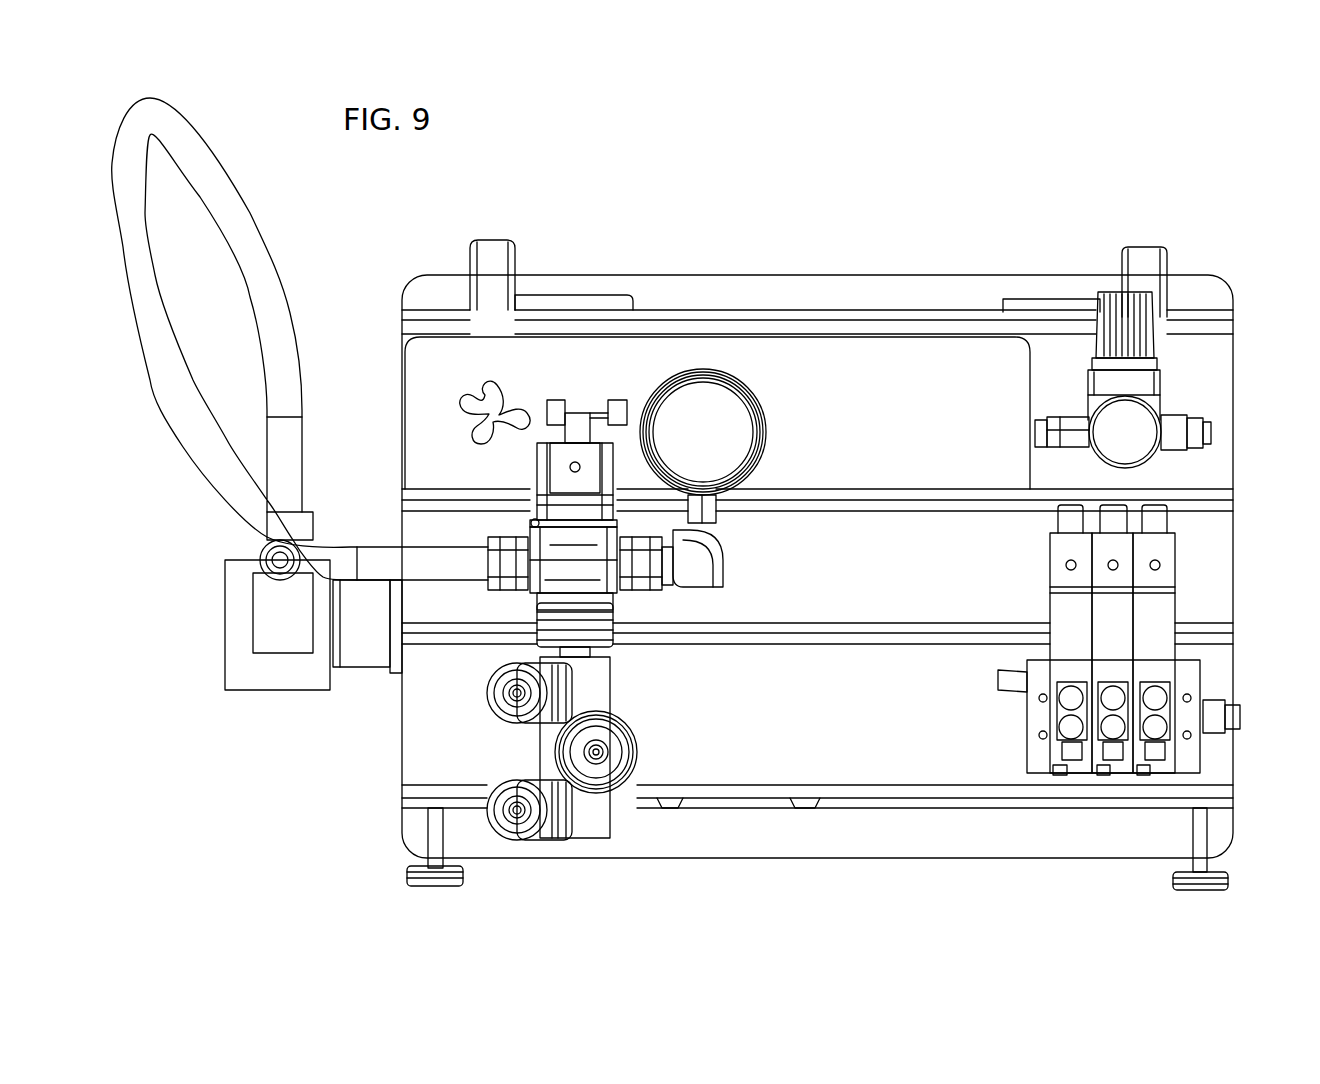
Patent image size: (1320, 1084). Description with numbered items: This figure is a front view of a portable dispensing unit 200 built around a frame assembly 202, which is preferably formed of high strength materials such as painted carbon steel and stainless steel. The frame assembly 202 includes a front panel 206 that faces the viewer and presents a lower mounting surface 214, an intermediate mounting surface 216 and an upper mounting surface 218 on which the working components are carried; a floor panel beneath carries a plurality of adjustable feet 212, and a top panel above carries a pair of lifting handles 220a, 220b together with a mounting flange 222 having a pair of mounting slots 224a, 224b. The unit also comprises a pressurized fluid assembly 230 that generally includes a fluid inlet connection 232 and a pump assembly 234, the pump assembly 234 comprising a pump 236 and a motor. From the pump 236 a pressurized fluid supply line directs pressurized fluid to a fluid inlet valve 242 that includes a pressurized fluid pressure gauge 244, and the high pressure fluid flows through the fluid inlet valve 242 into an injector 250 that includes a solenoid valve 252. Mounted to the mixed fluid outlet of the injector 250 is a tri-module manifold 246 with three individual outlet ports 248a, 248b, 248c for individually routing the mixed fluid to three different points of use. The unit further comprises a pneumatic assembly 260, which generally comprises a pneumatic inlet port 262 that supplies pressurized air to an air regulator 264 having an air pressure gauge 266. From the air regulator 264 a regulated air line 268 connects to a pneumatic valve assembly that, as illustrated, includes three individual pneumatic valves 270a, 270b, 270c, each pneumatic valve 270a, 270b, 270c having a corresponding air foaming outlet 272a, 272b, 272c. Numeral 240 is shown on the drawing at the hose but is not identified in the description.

The portable dispensing unit 200 is at (952, 185).
The frame assembly 202 is at (1236, 367).
The front panel 206 is at (782, 765).
The adjustable feet 212 is at (436, 887).
The lower mounting surface 214 is at (840, 765).
The intermediate mounting surface 216 is at (915, 603).
The upper mounting surface 218 is at (797, 360).
The lifting handle 220a is at (490, 240).
The lifting handle 220b is at (1140, 248).
The mounting flange 222 is at (700, 280).
The mounting slot 224a is at (567, 296).
The mounting slot 224b is at (1040, 300).
The pressurized fluid assembly 230 is at (372, 672).
The fluid inlet connection 232 is at (277, 568).
The pump assembly 234 is at (350, 668).
The pump 236 is at (245, 685).
The hose 240 is at (262, 256).
The fluid inlet valve 242 is at (530, 535).
The pressurized fluid pressure gauge 244 is at (712, 395).
The tri-module manifold 246 is at (590, 827).
The outlet port 248a is at (490, 710).
The outlet port 248b is at (620, 768).
The outlet port 248c is at (520, 840).
The injector 250 is at (613, 598).
The solenoid valve 252 is at (560, 466).
The pneumatic assembly 260 is at (1163, 388).
The pneumatic inlet port 262 is at (1212, 432).
The air regulator 264 is at (1150, 325).
The air pressure gauge 266 is at (1135, 450).
The regulated air line 268 is at (1035, 428).
The pneumatic valve 270a is at (1070, 607).
The pneumatic valve 270b is at (1115, 635).
The pneumatic valve 270c is at (1155, 662).
The air foaming outlet 272a is at (1068, 705).
The air foaming outlet 272b is at (1110, 705).
The air foaming outlet 272c is at (1153, 703).